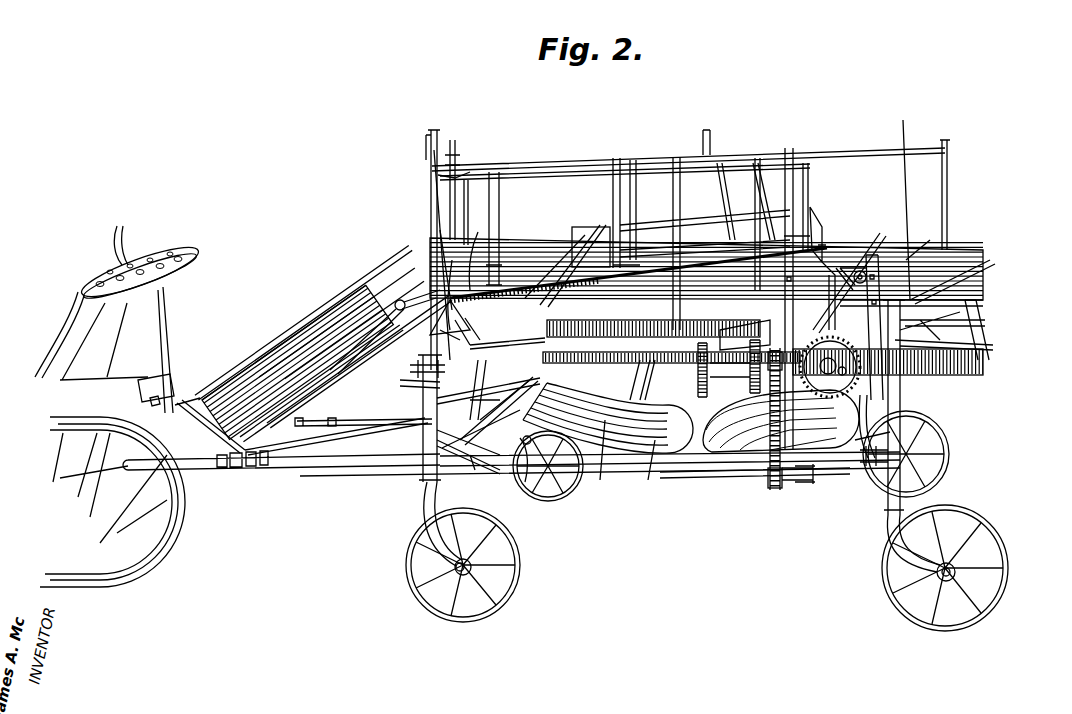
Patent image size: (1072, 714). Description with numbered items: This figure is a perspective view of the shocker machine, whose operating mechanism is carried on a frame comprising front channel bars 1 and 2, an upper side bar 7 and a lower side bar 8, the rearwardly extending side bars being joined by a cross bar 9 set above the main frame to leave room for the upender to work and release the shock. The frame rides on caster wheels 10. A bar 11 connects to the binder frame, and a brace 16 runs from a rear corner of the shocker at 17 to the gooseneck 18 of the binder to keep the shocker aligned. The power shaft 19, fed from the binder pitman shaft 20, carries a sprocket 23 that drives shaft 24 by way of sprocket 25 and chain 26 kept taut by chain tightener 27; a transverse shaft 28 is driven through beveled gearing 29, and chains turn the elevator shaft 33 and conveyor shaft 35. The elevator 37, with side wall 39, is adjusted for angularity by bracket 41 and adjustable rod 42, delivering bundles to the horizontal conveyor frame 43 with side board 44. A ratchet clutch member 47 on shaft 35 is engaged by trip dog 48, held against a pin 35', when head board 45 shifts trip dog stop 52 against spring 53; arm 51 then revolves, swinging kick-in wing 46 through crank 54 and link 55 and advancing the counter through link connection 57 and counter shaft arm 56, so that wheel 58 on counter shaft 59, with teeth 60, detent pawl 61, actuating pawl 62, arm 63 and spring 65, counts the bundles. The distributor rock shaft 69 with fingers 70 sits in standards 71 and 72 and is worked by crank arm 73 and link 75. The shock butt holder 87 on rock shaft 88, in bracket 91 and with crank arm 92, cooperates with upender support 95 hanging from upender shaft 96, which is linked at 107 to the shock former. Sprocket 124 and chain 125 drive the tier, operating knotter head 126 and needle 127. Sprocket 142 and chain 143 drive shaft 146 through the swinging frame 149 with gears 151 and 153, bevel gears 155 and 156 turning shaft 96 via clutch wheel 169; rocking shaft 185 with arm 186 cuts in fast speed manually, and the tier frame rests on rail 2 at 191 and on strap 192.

The front channel bar 1 is at (416, 470).
The front channel bar 2 is at (420, 384).
The upper side bar 7 is at (995, 366).
The lower side bar 8 is at (910, 456).
The cross bar 9 is at (990, 305).
The caster wheels 10 is at (512, 580).
The bar 11 is at (297, 432).
The brace 16 is at (325, 474).
The rear corner attachment point 17 is at (876, 475).
The gooseneck 18 is at (150, 466).
The power shaft 19 is at (712, 478).
The pitman shaft 20 is at (275, 474).
The sprocket 23 is at (475, 470).
The shaft 24 is at (586, 444).
The sprocket 25 is at (440, 400).
The chain 26 is at (438, 480).
The chain tightener 27 is at (437, 442).
The transverse shaft 28 is at (360, 312).
The beveled gearing 29 is at (377, 337).
The elevator shaft 33 is at (408, 260).
The conveyor shaft 35 is at (403, 269).
The pin 35' is at (477, 249).
The elevator 37 is at (300, 330).
The side wall 39 is at (275, 358).
The bracket 41 is at (250, 373).
The adjustable rod 42 is at (232, 392).
The horizontal bundle conveyor frame 43 is at (838, 267).
The side board 44 is at (545, 250).
The head board 45 is at (820, 215).
The kick-in wing 46 is at (785, 216).
The ratchet clutch member 47 is at (448, 300).
The trip dog 48 is at (440, 200).
The arm 51 is at (450, 270).
The trip dog stop 52 is at (592, 232).
The spring 53 is at (520, 240).
The crank 54 is at (438, 140).
The link 55 is at (430, 148).
The counter shaft arm 56 is at (414, 368).
The link connection 57 is at (420, 300).
The counting wheel 58 is at (591, 247).
The counter shaft 59 is at (560, 338).
The teeth 60 is at (608, 410).
The detent pawl 61 is at (560, 262).
The actuating pawl 62 is at (650, 340).
The arm 63 is at (671, 350).
The spring 65 is at (690, 262).
The rock shaft 69 is at (620, 162).
The depending fingers 70 is at (640, 170).
The standard 71 is at (943, 174).
The standard 72 is at (466, 230).
The crank arm 73 is at (458, 155).
The link 75 is at (438, 176).
The shock butt holder 87 is at (660, 450).
The rock shaft 88 is at (530, 446).
The bearing bracket 91 is at (516, 477).
The crank arm 92 is at (620, 400).
The upender support 95 is at (763, 447).
The upender shaft 96 is at (860, 372).
The link 107 is at (880, 270).
The sprocket 124 is at (350, 322).
The chain 125 is at (460, 338).
The knotter head 126 is at (730, 335).
The needle 127 is at (712, 138).
The sprocket 142 is at (780, 488).
The chain 143 is at (826, 425).
The shaft 146 is at (912, 285).
The swinging variable gear frame 149 is at (724, 380).
The larger gear 151 is at (790, 250).
The gear 153 is at (700, 240).
The beveled gear 155 is at (800, 385).
The beveled gear 156 is at (990, 348).
The clutch wheel 169 is at (985, 328).
The rocking shaft 185 is at (975, 282).
The arm 186 is at (960, 268).
The support point on rail 2 191 is at (495, 390).
The strap 192 is at (655, 380).